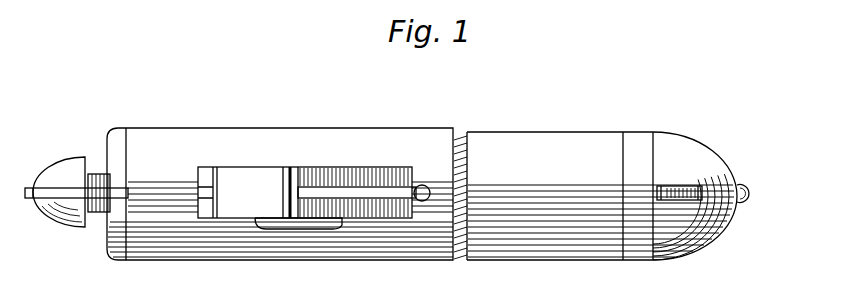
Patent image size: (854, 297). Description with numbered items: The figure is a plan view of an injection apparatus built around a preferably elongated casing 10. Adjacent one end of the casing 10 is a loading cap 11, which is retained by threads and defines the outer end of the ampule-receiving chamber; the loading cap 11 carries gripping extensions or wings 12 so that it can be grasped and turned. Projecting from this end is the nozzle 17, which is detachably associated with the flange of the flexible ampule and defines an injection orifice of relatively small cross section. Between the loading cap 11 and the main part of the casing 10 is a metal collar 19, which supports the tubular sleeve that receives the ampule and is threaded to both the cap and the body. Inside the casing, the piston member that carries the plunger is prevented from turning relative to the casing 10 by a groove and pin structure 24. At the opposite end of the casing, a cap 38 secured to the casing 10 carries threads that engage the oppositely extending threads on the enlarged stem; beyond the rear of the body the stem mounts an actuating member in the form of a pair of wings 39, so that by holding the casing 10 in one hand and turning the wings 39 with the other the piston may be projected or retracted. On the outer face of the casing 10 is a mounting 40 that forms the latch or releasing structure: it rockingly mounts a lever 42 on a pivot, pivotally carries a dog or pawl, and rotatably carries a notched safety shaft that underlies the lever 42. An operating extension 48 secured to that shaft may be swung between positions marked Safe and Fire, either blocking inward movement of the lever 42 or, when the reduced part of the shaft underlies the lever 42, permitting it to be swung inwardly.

The casing 10 is at (278, 130).
The loading cap 11 is at (722, 233).
The gripping extensions or wings 12 is at (668, 190).
The nozzle 17 is at (756, 191).
The collar 19 is at (637, 134).
The groove and pin structure 24 is at (419, 190).
The cap 38 is at (111, 140).
The wings (actuating member) 39 is at (68, 158).
The mounting 40 is at (334, 168).
The lever 42 is at (384, 168).
The operating extension 48 is at (326, 223).